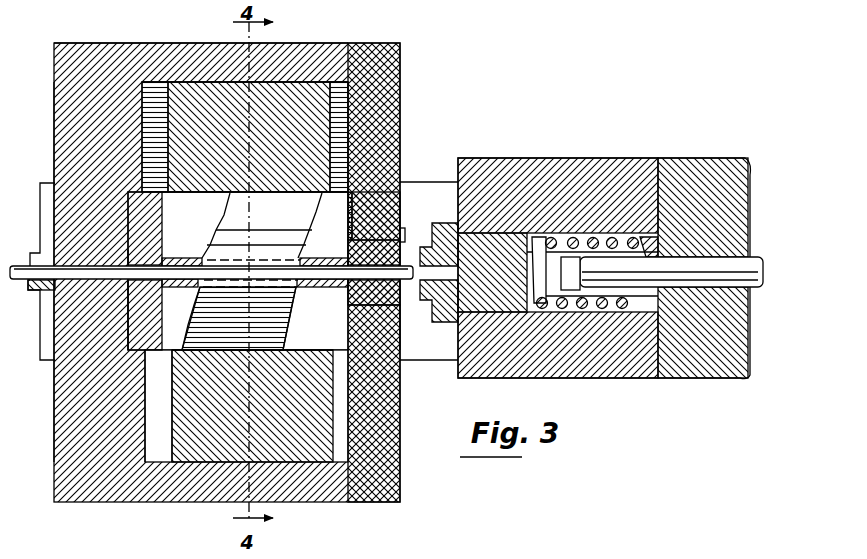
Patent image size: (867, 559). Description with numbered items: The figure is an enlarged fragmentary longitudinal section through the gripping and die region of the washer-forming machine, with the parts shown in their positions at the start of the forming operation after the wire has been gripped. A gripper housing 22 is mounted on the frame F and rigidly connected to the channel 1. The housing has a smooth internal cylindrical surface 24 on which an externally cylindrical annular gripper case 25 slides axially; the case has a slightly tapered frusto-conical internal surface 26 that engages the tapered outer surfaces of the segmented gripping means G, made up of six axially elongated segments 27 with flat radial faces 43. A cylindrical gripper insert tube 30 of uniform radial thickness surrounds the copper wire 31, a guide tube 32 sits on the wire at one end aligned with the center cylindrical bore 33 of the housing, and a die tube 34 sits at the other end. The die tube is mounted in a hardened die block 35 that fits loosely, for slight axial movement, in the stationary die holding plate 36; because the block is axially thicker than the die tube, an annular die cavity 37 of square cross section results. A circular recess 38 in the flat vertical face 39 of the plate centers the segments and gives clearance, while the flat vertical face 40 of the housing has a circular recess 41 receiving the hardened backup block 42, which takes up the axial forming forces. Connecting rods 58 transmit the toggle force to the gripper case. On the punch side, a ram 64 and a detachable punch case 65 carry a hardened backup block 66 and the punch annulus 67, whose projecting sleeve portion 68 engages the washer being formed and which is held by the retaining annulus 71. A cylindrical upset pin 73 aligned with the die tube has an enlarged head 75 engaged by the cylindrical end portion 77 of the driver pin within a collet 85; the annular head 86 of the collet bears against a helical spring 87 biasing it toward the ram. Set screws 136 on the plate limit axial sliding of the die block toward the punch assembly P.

The channel 1 is at (38, 198).
The gripper housing 22 is at (118, 503).
The internal cylindrical surface 24 is at (199, 459).
The gripper case 25 is at (276, 150).
The frusto-conical internal surface 26 is at (213, 193).
The segments 27 is at (267, 248).
The gripper insert tube 30 is at (205, 262).
The copper wire 31 is at (24, 264).
The guide tube 32 is at (137, 259).
The center cylindrical bore 33 is at (98, 280).
The die tube 34 is at (352, 258).
The die block 35 is at (388, 322).
The die holding plate 36 is at (385, 95).
The annular die cavity 37 is at (392, 245).
The circular recess 38 is at (350, 332).
The flat vertical face 39 is at (400, 135).
The flat vertical face 40 is at (145, 392).
The circular recess 41 is at (130, 340).
The backup block 42 is at (130, 200).
The flat radial faces 43 is at (170, 207).
The connecting rods 58 is at (38, 292).
The ram 64 is at (700, 159).
The punch case 65 is at (592, 160).
The backup block 66 is at (500, 232).
The punch annulus 67 is at (432, 248).
The sleeve portion 68 is at (425, 285).
The retaining annulus 71 is at (455, 356).
The upset pin 73 is at (503, 282).
The enlarged head 75 is at (585, 266).
The cylindrical end portion 77 is at (750, 262).
The collet 85 is at (600, 240).
The annular head 86 is at (655, 252).
The helical spring 87 is at (596, 308).
The set screw 136 is at (407, 235).
The frame F is at (50, 180).
The gripping means G is at (228, 186).
The pump housing P is at (490, 156).